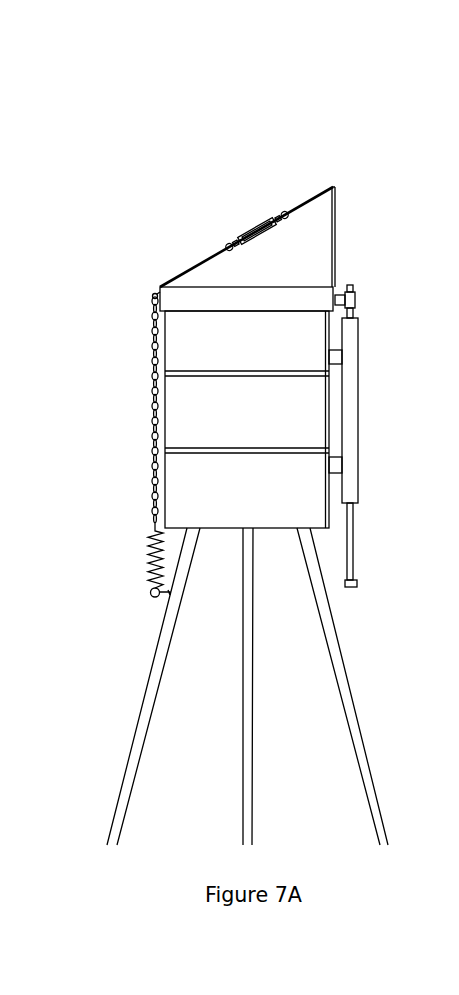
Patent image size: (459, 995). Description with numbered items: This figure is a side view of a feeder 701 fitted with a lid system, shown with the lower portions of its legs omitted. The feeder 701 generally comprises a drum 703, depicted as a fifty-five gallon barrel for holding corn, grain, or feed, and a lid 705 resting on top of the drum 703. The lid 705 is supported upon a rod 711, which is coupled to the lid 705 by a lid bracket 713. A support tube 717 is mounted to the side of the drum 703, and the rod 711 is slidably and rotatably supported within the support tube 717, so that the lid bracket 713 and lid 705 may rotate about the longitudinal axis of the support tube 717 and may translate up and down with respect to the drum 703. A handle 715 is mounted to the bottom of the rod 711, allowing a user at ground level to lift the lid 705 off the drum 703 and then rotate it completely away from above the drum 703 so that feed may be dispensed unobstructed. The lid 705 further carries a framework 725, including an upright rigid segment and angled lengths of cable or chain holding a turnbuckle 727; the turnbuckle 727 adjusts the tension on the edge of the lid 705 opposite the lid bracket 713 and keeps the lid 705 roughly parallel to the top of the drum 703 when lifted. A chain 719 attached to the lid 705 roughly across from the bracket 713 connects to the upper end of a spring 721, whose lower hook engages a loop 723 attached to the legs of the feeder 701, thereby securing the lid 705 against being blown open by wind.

The feeder 701 is at (157, 239).
The drum 703 is at (268, 420).
The lid 705 is at (160, 293).
The rod 711 is at (351, 525).
The lid bracket 713 is at (352, 298).
The handle 715 is at (356, 585).
The support tube 717 is at (346, 393).
The chain 719 is at (155, 402).
The spring 721 is at (148, 550).
The loop 723 is at (162, 598).
The framework 725 is at (335, 228).
The turnbuckle 727 is at (266, 221).